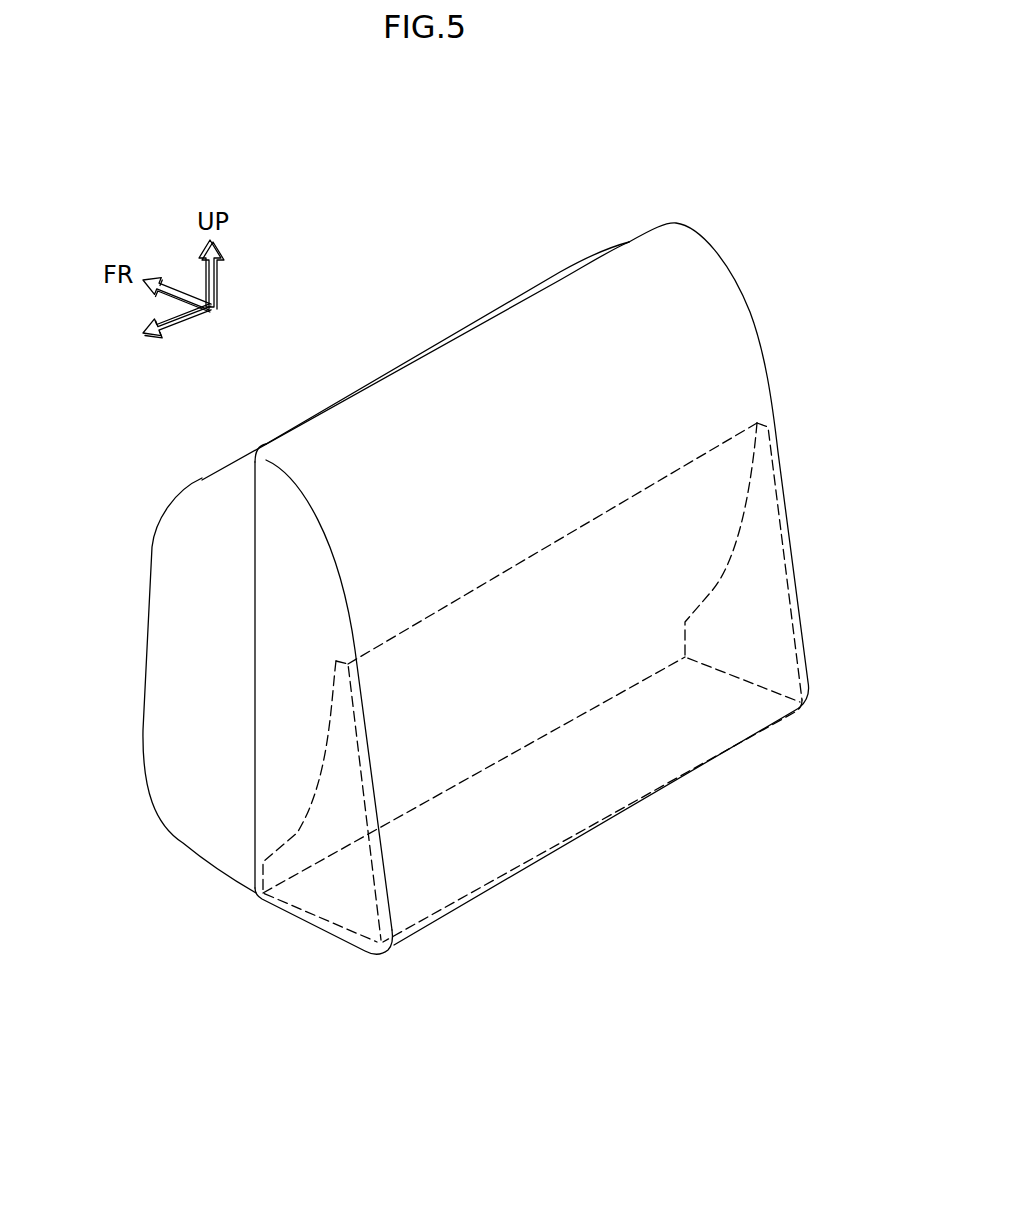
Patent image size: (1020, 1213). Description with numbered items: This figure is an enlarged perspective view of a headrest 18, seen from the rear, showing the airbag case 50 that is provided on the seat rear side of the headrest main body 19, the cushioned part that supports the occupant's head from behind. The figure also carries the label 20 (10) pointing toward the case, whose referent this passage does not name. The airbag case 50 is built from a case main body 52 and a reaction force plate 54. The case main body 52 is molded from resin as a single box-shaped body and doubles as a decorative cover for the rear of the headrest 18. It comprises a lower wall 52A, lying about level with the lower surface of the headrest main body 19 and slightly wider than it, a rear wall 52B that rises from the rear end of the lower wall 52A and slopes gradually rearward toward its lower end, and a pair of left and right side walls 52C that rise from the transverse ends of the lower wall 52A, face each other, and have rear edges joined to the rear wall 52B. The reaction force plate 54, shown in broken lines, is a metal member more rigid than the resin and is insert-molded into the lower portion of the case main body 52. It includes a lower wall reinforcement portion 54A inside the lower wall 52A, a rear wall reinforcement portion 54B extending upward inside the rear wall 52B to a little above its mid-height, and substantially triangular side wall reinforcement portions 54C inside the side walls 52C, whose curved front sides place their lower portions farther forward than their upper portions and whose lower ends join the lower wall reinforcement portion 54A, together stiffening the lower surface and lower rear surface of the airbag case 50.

The vehicle seat 10 is at (447, 308).
The headrest 18 is at (489, 212).
The headrest main body 19 is at (152, 547).
The storage device 20 is at (432, 298).
The airbag case 50 is at (688, 977).
The case main body 52 is at (519, 882).
The lower wall 52A is at (448, 917).
The rear wall 52B is at (653, 760).
The side walls 52C is at (770, 388).
The reaction force plate 54 is at (603, 825).
The lower wall reinforcement portion 54A is at (727, 755).
The rear wall reinforcement portion 54B is at (523, 695).
The side wall reinforcement portions 54C is at (758, 607).